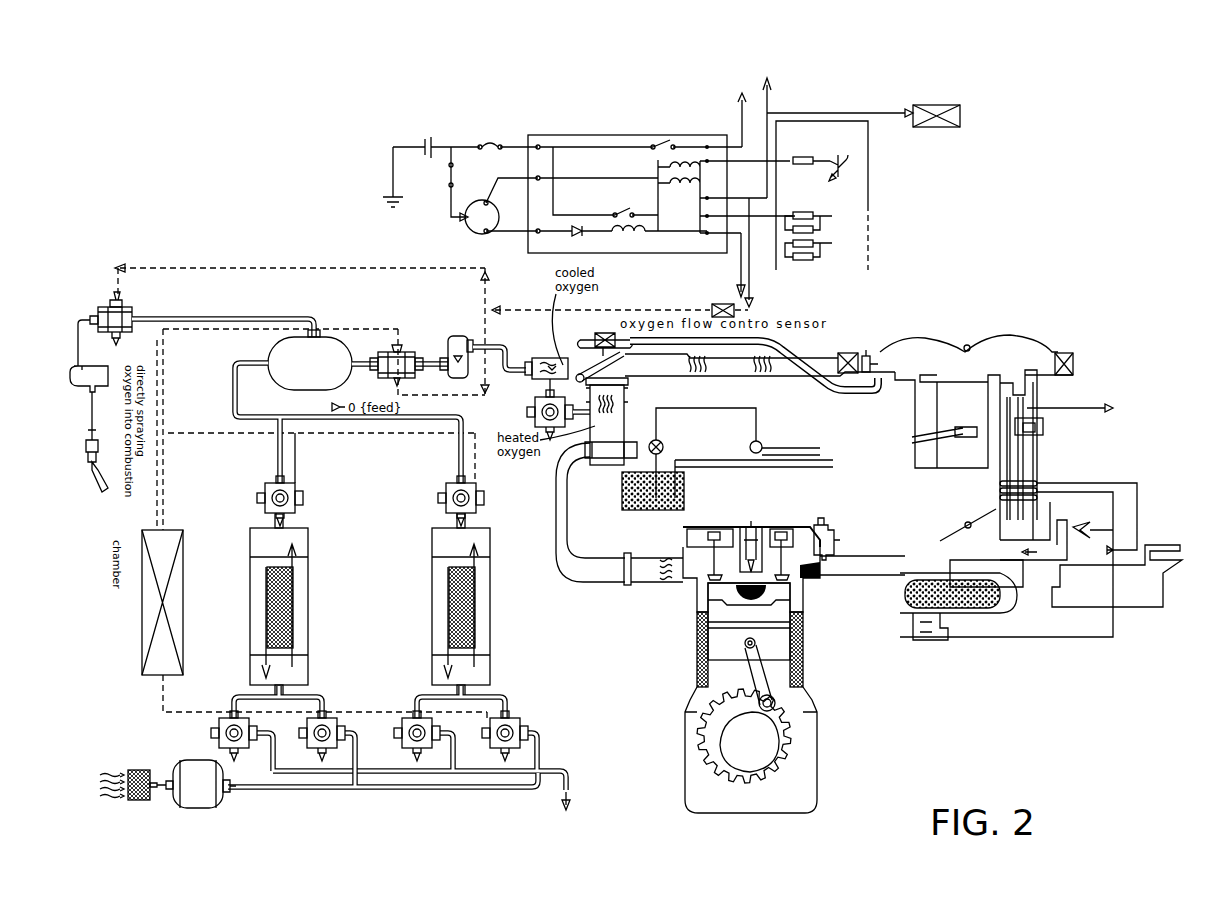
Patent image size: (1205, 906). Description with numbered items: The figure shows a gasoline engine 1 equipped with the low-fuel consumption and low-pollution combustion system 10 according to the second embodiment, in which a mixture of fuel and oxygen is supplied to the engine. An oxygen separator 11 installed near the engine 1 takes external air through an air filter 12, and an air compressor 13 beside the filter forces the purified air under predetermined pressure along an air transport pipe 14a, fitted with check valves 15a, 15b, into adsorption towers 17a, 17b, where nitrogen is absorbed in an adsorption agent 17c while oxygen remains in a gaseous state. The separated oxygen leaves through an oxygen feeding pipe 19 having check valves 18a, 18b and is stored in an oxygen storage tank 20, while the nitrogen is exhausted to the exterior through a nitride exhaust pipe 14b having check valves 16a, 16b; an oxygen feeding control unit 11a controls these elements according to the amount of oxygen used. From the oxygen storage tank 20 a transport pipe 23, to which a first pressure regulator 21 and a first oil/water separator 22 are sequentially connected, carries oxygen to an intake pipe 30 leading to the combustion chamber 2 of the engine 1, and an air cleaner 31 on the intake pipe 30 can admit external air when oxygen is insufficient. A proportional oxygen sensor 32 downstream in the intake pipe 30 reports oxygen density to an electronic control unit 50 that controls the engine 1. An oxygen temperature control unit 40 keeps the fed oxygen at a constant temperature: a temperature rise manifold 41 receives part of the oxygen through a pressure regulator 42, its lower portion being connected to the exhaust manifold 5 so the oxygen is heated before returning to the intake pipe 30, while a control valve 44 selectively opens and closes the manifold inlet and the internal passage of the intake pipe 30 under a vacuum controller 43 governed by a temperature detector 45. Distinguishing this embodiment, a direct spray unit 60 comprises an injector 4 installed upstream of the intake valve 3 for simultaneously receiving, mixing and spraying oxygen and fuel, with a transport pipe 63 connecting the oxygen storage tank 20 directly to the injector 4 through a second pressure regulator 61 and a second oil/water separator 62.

The engine 1 is at (764, 649).
The combustion chamber 2 is at (800, 612).
The intake valve 3 is at (774, 527).
The injector 4 is at (86, 456).
The exhaust manifold 5 is at (586, 575).
The low-fuel consumption and low-pollution combustion system 10 is at (143, 188).
The oxygen separator 11 is at (361, 673).
The oxygen feeding control unit 11a is at (142, 604).
The air filter 12 is at (137, 800).
The air compressor 13 is at (200, 795).
The air transport pipe 14a is at (480, 790).
The nitride exhaust pipe 14b is at (535, 790).
The check valve 15a is at (326, 715).
The check valve 15b is at (527, 744).
The check valve 16a is at (210, 734).
The check valve 16b is at (412, 715).
The adsorption tower 17a is at (310, 553).
The adsorption tower 17b is at (492, 578).
The adsorption agent 17c is at (293, 593).
The check valve 18a is at (303, 497).
The check valve 18b is at (484, 494).
The oxygen feeding pipe 19 is at (233, 396).
The oxygen storage tank 20 is at (272, 338).
The first pressure regulator 21 is at (397, 343).
The first oil/water separator 22 is at (455, 336).
The transport pipe 23 is at (503, 356).
The intake pipe 30 is at (798, 344).
The air cleaner 31 is at (848, 352).
The proportional oxygen sensor 32 is at (1035, 427).
The oxygen temperature control unit 40 is at (650, 388).
The temperature rise manifold 41 is at (650, 447).
The pressure regulator 42 is at (527, 412).
The vacuum controller 43 is at (611, 421).
The control valve 44 is at (550, 357).
The temperature detector 45 is at (868, 350).
The electronic control unit 50 is at (868, 203).
The direct spray unit 60 is at (105, 282).
The second pressure regulator 61 is at (98, 308).
The second oil/water separator 62 is at (72, 382).
The transport pipe 63 is at (165, 316).